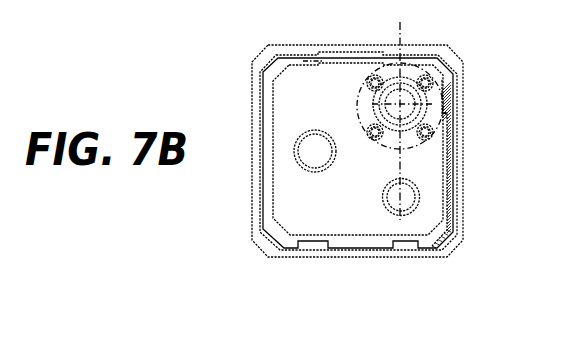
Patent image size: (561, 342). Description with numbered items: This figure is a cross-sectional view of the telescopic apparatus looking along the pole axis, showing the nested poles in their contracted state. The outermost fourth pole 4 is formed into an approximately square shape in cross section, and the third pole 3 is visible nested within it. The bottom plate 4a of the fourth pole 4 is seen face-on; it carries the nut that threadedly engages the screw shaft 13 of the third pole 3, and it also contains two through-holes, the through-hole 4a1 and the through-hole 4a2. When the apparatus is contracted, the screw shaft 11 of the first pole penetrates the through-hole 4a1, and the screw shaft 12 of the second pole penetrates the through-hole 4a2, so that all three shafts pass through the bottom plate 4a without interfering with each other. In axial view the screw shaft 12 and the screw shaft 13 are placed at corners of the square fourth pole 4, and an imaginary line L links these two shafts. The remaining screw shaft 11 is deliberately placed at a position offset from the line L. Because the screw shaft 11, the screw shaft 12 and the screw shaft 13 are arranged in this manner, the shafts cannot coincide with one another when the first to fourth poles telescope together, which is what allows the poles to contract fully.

The third pole 3 is at (461, 202).
The fourth pole 4 is at (441, 80).
The bottom plate 4a is at (297, 209).
The through-hole 4a1 is at (314, 129).
The through-hole 4a2 is at (417, 187).
The screw shaft 11 is at (313, 153).
The screw shaft 12 is at (395, 198).
The screw shaft 13 is at (393, 87).
The line L is at (398, 162).